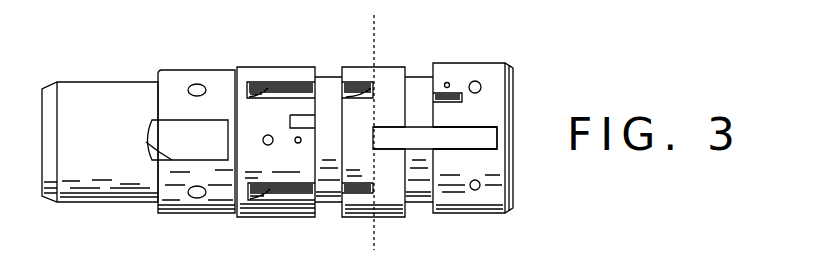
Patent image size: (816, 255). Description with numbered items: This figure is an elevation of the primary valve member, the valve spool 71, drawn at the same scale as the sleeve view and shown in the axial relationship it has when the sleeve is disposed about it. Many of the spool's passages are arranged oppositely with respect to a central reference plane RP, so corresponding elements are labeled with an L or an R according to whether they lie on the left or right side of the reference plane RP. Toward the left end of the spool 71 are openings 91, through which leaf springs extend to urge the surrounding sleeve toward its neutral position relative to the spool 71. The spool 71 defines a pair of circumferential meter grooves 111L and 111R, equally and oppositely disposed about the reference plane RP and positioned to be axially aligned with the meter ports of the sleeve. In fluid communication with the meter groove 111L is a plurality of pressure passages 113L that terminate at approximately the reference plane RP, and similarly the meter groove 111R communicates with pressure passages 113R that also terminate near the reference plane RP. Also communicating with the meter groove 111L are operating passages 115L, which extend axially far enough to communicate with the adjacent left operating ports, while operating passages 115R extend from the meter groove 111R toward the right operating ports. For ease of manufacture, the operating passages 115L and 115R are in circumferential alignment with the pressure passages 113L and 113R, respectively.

The valve spool 71 is at (148, 68).
The openings 91 is at (146, 148).
The operating passages 115L is at (262, 95).
The circumferential meter groove 111L is at (328, 70).
The pressure passages 113L is at (363, 187).
The pressure passages 113R is at (388, 142).
The circumferential meter groove 111R is at (417, 70).
The operating passages 115R is at (483, 137).
The reference plane RP is at (374, 32).